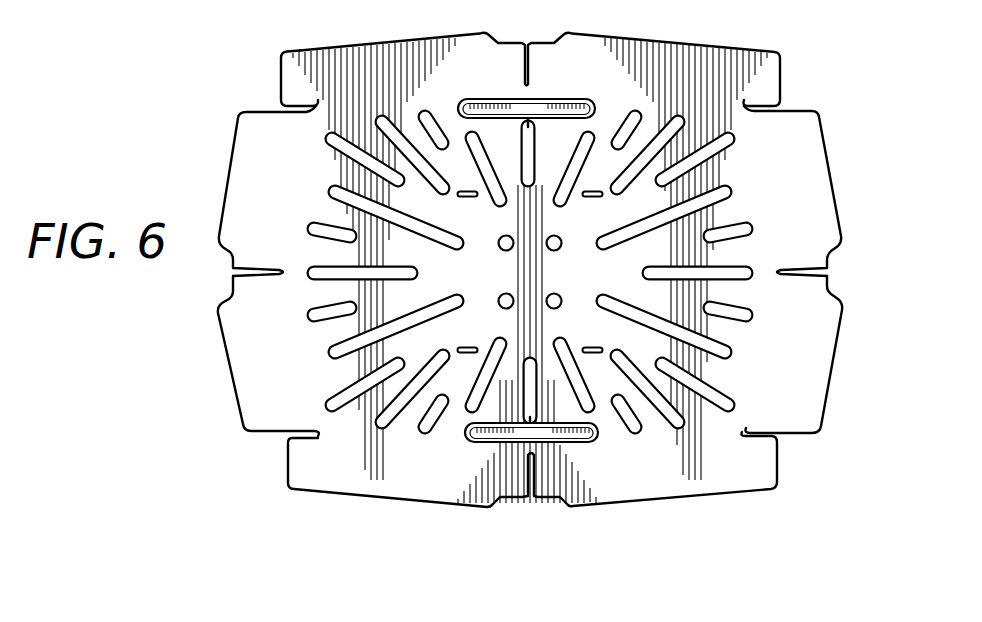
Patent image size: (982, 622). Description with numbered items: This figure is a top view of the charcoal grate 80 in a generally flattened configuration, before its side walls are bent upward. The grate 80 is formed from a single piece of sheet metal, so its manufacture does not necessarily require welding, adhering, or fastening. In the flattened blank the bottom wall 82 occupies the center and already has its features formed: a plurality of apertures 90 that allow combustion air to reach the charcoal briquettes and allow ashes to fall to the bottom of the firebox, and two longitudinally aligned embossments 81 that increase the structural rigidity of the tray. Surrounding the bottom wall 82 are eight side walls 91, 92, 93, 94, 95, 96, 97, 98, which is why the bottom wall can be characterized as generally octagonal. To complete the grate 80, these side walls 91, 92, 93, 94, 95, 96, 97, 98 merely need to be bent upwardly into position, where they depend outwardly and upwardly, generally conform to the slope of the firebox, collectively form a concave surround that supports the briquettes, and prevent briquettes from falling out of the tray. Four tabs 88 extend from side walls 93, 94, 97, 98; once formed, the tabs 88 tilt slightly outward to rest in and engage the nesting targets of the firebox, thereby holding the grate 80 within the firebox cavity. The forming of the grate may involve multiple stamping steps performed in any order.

The charcoal grate 80 is at (221, 131).
The embossments 81 is at (467, 438).
The bottom wall 82 is at (660, 247).
The tabs 88 is at (288, 92).
The apertures 90 is at (727, 137).
The side wall 91 is at (250, 193).
The side wall 92 is at (325, 68).
The side wall 93 is at (668, 58).
The side wall 94 is at (807, 172).
The side wall 95 is at (817, 353).
The side wall 96 is at (672, 467).
The side wall 97 is at (388, 470).
The side wall 98 is at (262, 345).